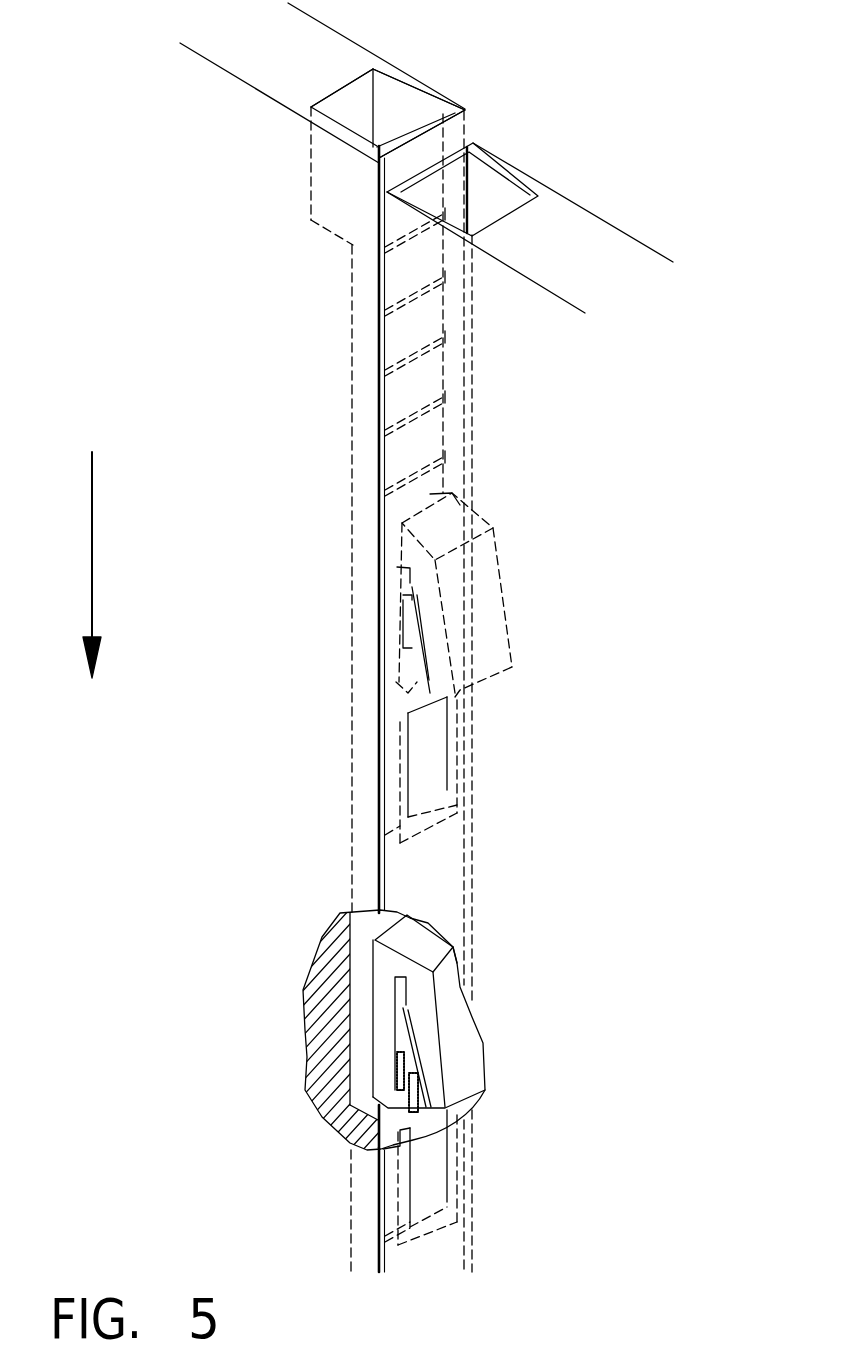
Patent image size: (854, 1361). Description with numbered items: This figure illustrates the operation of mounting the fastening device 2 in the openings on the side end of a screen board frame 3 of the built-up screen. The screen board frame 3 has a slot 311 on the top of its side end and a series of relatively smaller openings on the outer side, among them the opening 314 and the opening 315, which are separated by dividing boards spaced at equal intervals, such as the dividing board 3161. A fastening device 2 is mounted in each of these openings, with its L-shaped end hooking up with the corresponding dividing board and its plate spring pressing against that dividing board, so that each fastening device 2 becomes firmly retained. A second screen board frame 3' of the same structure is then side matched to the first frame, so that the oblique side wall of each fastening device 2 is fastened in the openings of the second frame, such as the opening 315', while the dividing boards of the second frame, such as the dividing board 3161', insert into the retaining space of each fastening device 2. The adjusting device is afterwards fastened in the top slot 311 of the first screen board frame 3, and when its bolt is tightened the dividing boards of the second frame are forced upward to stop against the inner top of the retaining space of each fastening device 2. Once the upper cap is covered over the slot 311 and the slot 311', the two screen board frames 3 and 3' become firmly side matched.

The screen board frame 3 is at (319, 657).
The second screen board frame 3' is at (496, 158).
The slot 311 is at (421, 79).
The slot 311' is at (503, 158).
The fastening device 2 is at (488, 612).
The opening 314 is at (402, 628).
The opening 315 is at (323, 770).
The opening 315' is at (514, 756).
The dividing board 3161 is at (289, 1082).
The dividing board 3161' is at (300, 1164).